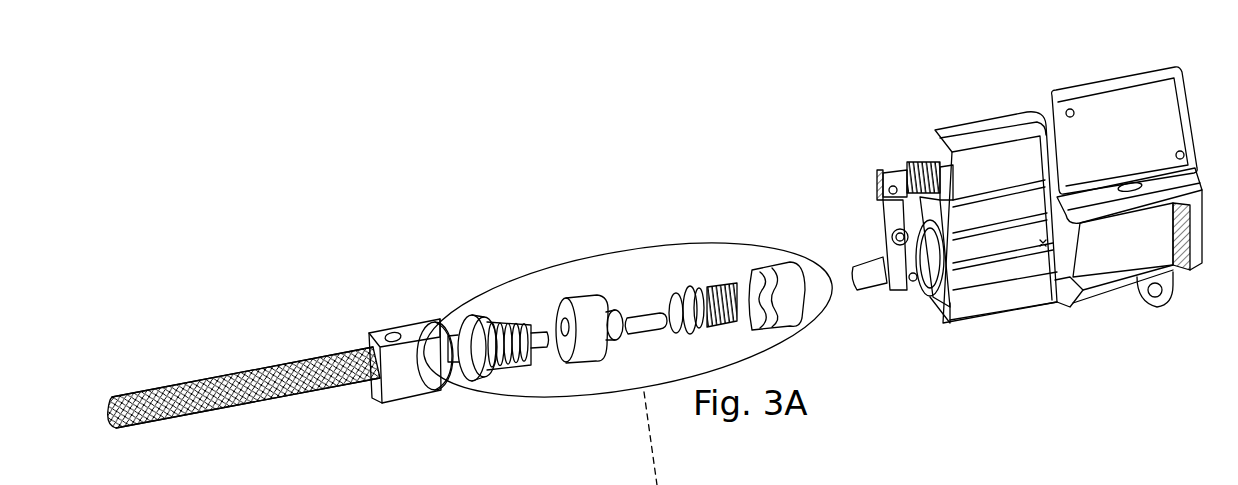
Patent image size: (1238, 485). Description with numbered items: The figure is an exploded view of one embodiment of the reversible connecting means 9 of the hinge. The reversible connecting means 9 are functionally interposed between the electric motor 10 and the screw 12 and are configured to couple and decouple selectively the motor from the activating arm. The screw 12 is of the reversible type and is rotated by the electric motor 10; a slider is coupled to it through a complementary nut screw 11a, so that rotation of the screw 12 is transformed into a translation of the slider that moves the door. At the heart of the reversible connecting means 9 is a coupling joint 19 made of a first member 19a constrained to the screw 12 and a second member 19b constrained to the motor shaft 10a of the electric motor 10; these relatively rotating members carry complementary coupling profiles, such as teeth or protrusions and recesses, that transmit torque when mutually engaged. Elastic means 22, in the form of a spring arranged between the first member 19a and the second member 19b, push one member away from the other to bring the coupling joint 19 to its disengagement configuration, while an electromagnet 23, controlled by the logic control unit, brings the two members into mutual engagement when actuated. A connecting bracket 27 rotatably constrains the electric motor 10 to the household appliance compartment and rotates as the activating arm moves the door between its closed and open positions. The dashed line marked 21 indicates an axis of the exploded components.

The reversible connecting means 9 is at (412, 170).
The screw 12 is at (170, 385).
The nut screw 11a is at (408, 327).
The coupling joint 19 is at (526, 404).
The first member 19a is at (573, 300).
The second member 19b is at (785, 263).
The elastic means 22 is at (713, 283).
The axis line 21 is at (746, 438).
The electric motor 10 is at (1088, 316).
The motor shaft 10a is at (872, 290).
The electromagnet 23 is at (918, 127).
The connecting bracket 27 is at (1115, 295).